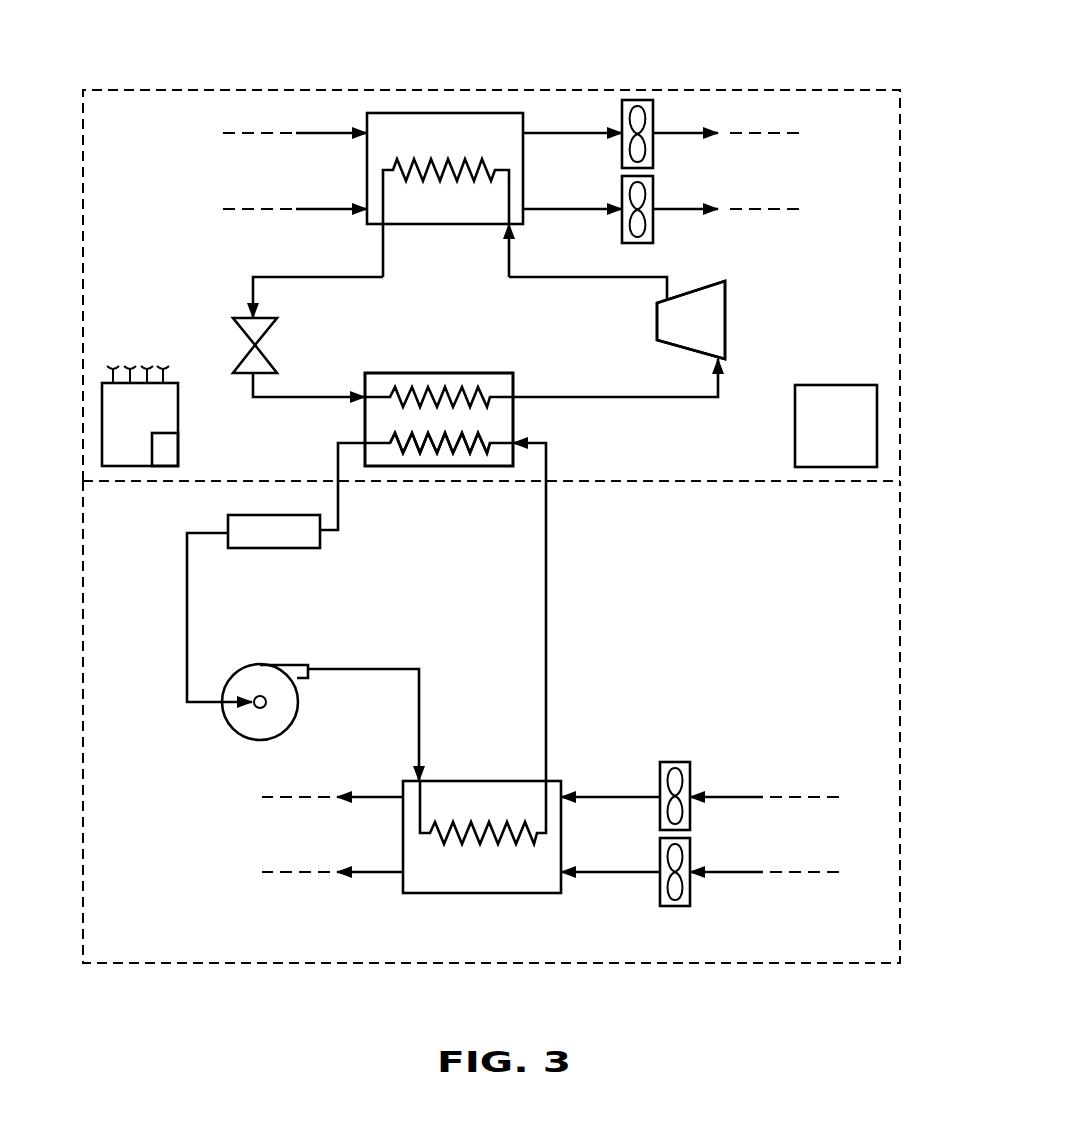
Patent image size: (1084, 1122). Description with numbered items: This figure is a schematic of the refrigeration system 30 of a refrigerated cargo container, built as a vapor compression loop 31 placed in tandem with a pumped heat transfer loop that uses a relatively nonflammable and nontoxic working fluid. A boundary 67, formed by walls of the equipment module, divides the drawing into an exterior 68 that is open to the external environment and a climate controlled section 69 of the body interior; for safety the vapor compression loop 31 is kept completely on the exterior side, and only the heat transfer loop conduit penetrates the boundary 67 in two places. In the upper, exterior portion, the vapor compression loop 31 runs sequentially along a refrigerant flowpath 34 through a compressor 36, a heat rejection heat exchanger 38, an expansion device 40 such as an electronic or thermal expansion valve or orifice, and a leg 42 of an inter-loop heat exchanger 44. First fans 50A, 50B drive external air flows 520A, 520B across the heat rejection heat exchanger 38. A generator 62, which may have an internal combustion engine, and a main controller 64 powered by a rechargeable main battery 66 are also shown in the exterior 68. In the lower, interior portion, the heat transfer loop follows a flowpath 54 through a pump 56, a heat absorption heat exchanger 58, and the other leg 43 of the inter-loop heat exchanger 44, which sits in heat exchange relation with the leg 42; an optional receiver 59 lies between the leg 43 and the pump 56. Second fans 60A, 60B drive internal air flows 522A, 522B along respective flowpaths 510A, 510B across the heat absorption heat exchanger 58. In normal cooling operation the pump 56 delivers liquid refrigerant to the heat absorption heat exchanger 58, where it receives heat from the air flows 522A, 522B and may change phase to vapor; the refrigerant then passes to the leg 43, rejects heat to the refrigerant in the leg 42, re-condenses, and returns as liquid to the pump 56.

The refrigeration system 30 is at (132, 48).
The vapor compression loop 31 is at (840, 177).
The refrigerant flowpath 34 is at (688, 275).
The compressor 36 is at (725, 325).
The heat rejection heat exchanger 38 is at (455, 113).
The expansion device 40 is at (243, 350).
The leg of inter-loop heat exchanger 42 is at (453, 380).
The leg of inter-loop heat exchanger 43 is at (440, 452).
The inter-loop heat exchanger 44 is at (500, 466).
The first fan 50A is at (641, 100).
The first fan 50B is at (648, 243).
The flowpath 54 is at (565, 671).
The pump 56 is at (232, 727).
The heat absorption heat exchanger 58 is at (475, 781).
The receiver 59 is at (278, 548).
The second fan 60A is at (678, 762).
The second fan 60B is at (678, 906).
The generator 62 is at (849, 440).
The main controller 64 is at (153, 426).
The main battery 66 is at (172, 452).
The boundary 67 is at (678, 481).
The exterior 68 is at (900, 290).
The climate controlled section 69 is at (900, 915).
The flowpath 510A is at (805, 797).
The flowpath 510B is at (300, 875).
The external air flow 520A is at (330, 133).
The external air flow 520B is at (325, 209).
The internal air flow 522A is at (740, 797).
The internal air flow 522B is at (745, 872).